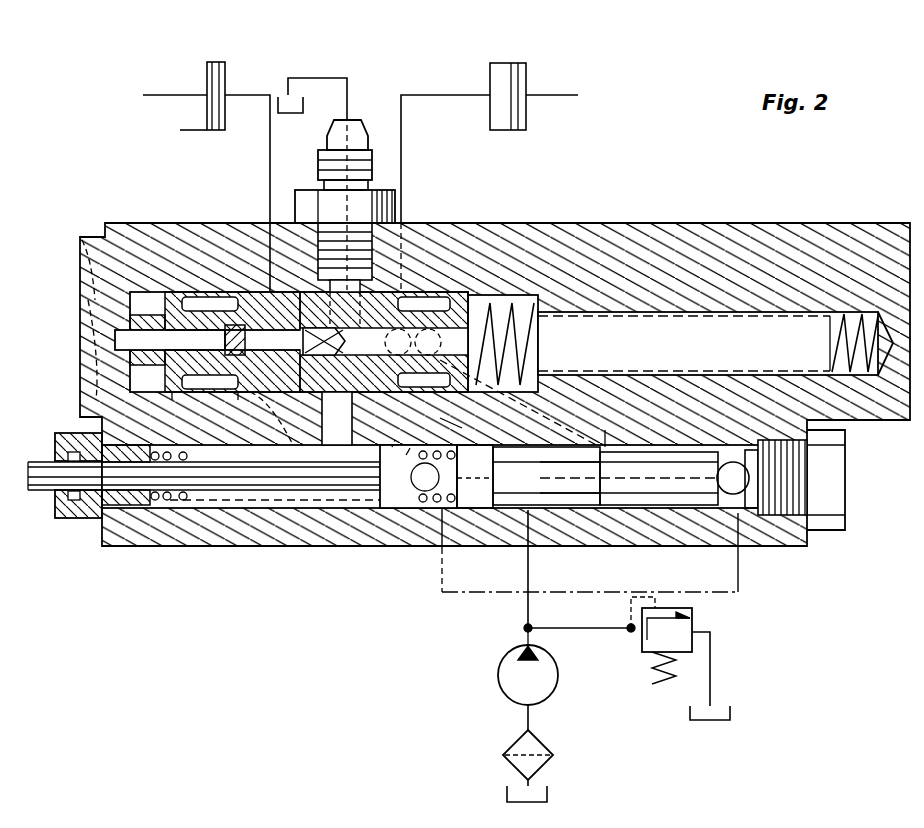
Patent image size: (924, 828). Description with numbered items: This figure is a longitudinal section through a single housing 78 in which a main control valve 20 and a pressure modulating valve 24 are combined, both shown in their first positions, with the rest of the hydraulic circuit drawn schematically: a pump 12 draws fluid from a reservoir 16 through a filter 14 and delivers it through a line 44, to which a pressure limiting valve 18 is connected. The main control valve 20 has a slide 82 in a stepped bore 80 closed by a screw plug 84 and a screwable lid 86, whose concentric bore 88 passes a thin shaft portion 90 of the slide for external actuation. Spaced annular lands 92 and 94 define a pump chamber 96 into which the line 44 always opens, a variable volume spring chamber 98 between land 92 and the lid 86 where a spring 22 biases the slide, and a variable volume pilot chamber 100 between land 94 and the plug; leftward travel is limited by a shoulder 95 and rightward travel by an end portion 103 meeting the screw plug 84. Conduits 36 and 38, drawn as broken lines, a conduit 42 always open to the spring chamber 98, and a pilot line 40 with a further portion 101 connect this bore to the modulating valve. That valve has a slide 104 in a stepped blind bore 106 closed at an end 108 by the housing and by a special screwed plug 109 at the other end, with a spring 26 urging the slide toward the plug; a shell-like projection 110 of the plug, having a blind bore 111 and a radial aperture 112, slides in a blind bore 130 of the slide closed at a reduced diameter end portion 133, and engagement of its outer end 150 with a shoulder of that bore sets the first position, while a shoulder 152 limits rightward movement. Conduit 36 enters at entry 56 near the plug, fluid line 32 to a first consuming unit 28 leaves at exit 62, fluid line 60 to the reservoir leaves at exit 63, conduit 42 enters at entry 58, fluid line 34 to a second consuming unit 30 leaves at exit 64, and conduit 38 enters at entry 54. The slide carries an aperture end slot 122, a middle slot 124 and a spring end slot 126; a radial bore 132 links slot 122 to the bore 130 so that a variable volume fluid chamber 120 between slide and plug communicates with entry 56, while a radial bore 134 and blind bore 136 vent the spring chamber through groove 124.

The pump 12 is at (500, 667).
The filter 14 is at (546, 752).
The reservoir 16 is at (281, 113).
The pressure limiting valve 18 is at (692, 612).
The main control valve 20 is at (405, 578).
The spring 22 is at (186, 492).
The pressure modulating valve 24 is at (634, 224).
The spring 26 is at (693, 314).
The first consuming unit 28 is at (226, 125).
The second consuming unit 30 is at (492, 130).
The fluid line 32 is at (270, 192).
The fluid line 34 is at (402, 118).
The conduit 36 is at (310, 415).
The conduit 38 is at (580, 426).
The pilot line 40 is at (736, 447).
The conduit 42 is at (396, 446).
The line 44 is at (528, 612).
The entry opening 54 is at (462, 419).
The entry opening 56 is at (88, 240).
The entry opening 58 is at (324, 404).
The fluid line 60 is at (348, 80).
The exit opening 62 is at (293, 306).
The exit opening 63 is at (377, 268).
The exit opening 64 is at (393, 344).
The housing 78 is at (284, 546).
The stepped cylindrical bore 80 is at (606, 446).
The slide 82 is at (606, 482).
The screw plug 84 is at (838, 443).
The screwable lid 86 is at (78, 518).
The concentric bore 88 is at (55, 445).
The shaft portion 90 is at (328, 492).
The annular land 92 is at (477, 502).
The annular land 94 is at (660, 483).
The shoulder 95 is at (408, 450).
The pump chamber 96 is at (568, 502).
The variable volume spring chamber 98 is at (232, 502).
The variable volume pilot chamber 100 is at (748, 510).
The portion of pilot circuit 101 is at (442, 580).
The end portion 103 is at (722, 468).
The slide 104 is at (462, 338).
The stepped blind bore 106 is at (755, 310).
The closed end 108 is at (746, 347).
The special screwed plug 109 is at (108, 282).
The shell-like projection 110 is at (163, 327).
The blind bore 111 is at (115, 340).
The radial aperture 112 is at (128, 352).
The variable volume fluid chamber 120 is at (143, 292).
The aperture end slot 122 is at (208, 297).
The middle slot 124 is at (315, 298).
The spring end slot 126 is at (424, 297).
The blind bore 130 is at (172, 392).
The radial bore 132 is at (238, 386).
The reduced diameter end portion 133 is at (240, 318).
The radial bore 134 is at (352, 394).
The blind bore 136 is at (470, 297).
The outer end of projection 150 is at (168, 330).
The shoulder 152 is at (543, 298).